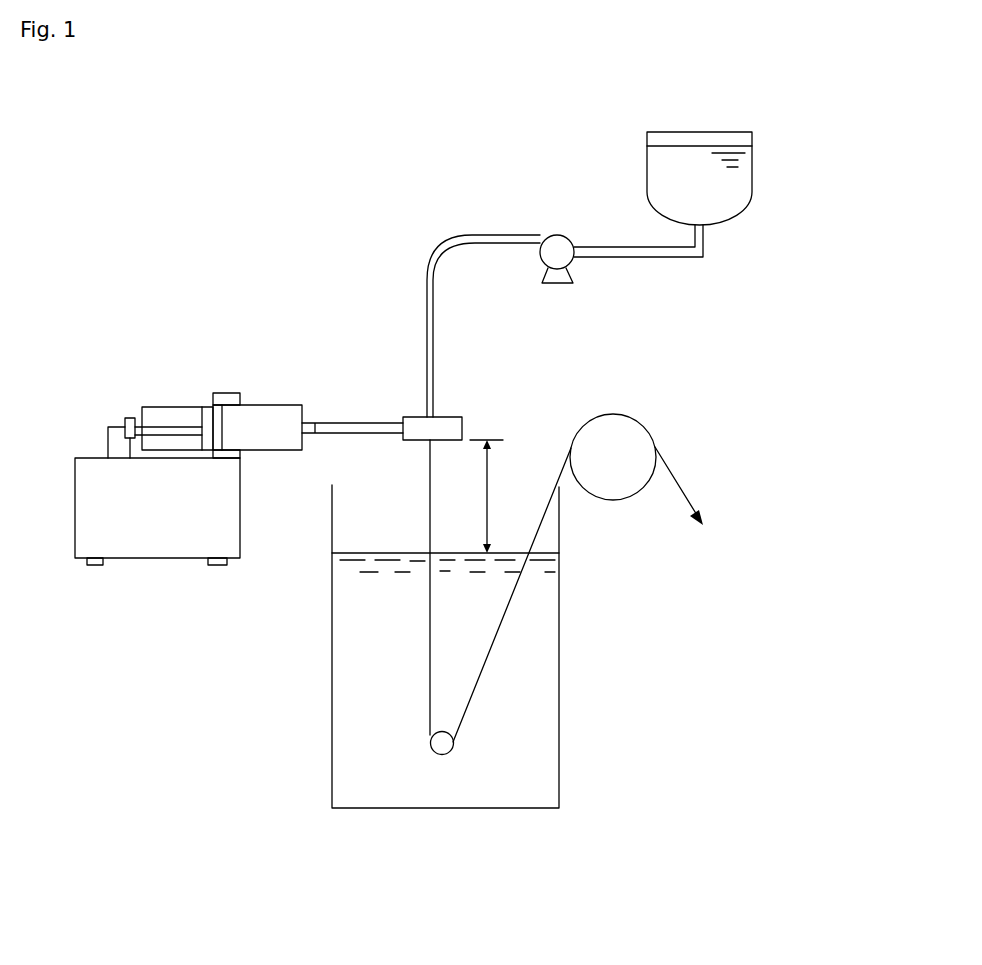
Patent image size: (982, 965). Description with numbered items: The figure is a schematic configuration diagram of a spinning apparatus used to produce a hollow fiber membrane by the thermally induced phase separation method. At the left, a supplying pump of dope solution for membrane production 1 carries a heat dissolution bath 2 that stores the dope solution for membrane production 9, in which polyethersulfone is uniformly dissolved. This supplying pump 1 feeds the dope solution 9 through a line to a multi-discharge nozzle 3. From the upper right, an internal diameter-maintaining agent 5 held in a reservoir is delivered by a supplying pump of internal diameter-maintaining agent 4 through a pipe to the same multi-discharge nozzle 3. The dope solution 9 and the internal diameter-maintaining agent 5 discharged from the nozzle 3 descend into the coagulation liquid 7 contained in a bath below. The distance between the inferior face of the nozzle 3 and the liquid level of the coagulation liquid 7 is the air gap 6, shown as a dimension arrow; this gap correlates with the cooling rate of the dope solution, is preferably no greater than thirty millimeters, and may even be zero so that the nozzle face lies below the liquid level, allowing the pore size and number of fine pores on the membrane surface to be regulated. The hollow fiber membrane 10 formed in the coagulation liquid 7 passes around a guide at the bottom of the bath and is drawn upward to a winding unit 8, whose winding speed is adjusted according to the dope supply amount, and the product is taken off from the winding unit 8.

The supplying pump of dope solution for membrane production 1 is at (100, 411).
The heat dissolution bath 2 is at (267, 403).
The multi-discharge nozzle 3 is at (452, 417).
The supplying pump of internal diameter-maintaining agent 4 is at (537, 260).
The internal diameter-maintaining agent 5 is at (658, 172).
The air gap 6 is at (487, 500).
The coagulation liquid 7 is at (533, 727).
The winding unit 8 is at (607, 500).
The dope solution for membrane production 9 is at (265, 437).
The hollow fiber membrane 10 is at (503, 617).